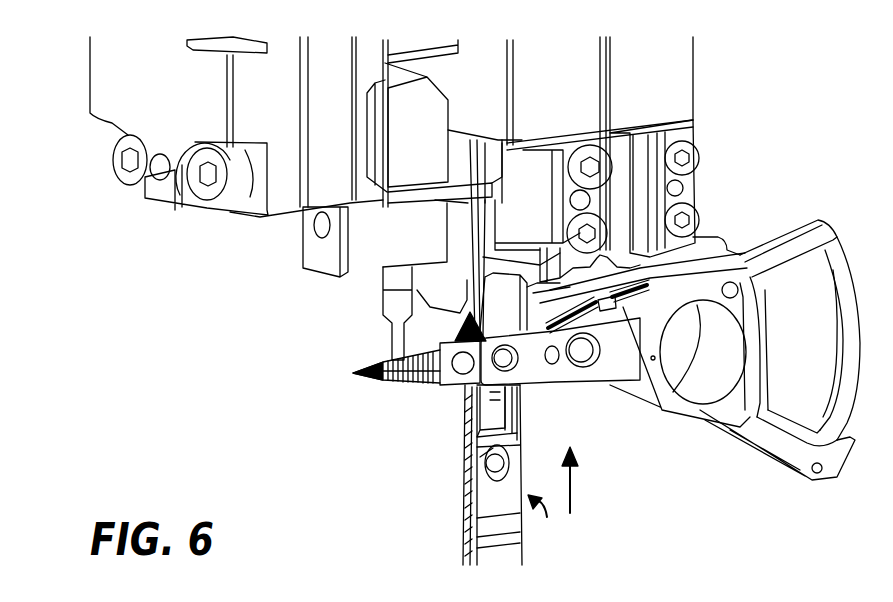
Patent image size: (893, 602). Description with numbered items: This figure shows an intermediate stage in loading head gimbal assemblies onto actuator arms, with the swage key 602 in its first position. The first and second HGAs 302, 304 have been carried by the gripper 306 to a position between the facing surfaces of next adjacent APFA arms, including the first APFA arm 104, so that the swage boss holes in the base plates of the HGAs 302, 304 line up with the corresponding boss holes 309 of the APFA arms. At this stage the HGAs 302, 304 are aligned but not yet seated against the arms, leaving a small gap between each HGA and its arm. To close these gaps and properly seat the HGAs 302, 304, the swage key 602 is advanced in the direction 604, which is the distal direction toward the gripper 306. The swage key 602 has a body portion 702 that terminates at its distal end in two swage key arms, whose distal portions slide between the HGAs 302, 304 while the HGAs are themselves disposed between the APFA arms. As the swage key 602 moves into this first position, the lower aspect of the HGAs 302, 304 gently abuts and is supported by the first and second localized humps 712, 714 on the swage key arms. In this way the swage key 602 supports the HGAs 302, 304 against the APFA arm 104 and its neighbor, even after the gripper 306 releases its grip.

The first APFA arm 104 is at (505, 335).
The first HGA 302 is at (450, 387).
The second HGA 304 is at (440, 344).
The gripper 306 is at (570, 275).
The boss holes 309 is at (506, 362).
The swage key 602 is at (548, 516).
The direction of swage key movement 604 is at (573, 478).
The body portion 702 is at (466, 500).
The first localized hump 712 is at (467, 424).
The second localized hump 714 is at (520, 412).